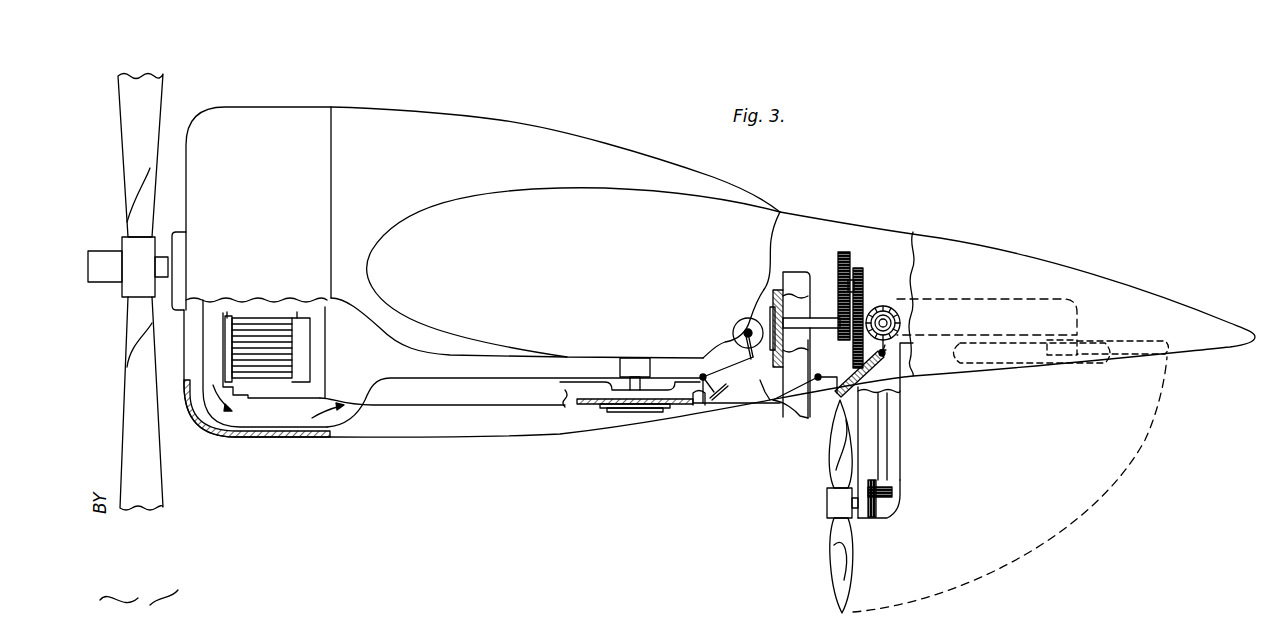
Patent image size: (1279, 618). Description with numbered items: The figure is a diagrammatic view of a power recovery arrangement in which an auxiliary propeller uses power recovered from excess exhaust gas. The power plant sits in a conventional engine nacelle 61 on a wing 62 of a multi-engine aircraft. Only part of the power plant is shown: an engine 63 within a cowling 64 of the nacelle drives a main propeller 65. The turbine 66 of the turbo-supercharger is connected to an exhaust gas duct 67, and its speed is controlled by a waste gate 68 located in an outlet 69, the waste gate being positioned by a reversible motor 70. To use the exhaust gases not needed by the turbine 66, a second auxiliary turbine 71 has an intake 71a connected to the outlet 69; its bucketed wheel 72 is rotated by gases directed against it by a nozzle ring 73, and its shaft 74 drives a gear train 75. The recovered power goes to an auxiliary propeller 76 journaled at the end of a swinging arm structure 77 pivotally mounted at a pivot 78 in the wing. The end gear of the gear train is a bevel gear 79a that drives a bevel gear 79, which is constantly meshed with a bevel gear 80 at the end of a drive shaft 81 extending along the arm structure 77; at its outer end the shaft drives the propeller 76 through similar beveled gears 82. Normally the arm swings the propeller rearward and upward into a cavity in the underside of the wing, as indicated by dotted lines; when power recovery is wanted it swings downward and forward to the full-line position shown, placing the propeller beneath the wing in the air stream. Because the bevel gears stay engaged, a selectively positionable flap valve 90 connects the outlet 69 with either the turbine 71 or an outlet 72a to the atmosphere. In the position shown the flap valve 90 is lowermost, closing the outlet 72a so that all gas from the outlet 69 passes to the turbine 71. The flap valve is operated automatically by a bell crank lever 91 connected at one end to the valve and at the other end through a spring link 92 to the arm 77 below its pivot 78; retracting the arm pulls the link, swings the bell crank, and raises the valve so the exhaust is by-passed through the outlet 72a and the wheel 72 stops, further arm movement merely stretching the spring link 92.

The engine nacelle 61 is at (490, 137).
The wing 62 is at (590, 205).
The engine 63 is at (266, 308).
The cowling 64 is at (299, 122).
The propeller 65 is at (152, 89).
The turbine 66 is at (584, 407).
The exhaust gas duct 67 is at (497, 395).
The waste gate 68 is at (716, 398).
The outlet 69 is at (702, 405).
The reversible motor 70 is at (755, 325).
The auxiliary turbine 71 is at (768, 355).
The intake 71a is at (764, 398).
The bucketed wheel 72 is at (771, 294).
The outlet to the atmosphere 72a is at (803, 408).
The nozzle ring 73 is at (777, 290).
The shaft 74 is at (818, 321).
The gear train 75 is at (865, 263).
The auxiliary propeller 76 is at (840, 568).
The swinging arm structure 77 is at (893, 430).
The pivot 78 is at (893, 315).
The bevel gear 79 is at (903, 320).
The bevel gear 79a is at (885, 306).
The bevel gear 80 is at (895, 322).
The drive shaft 81 is at (883, 408).
The beveled gears 82 is at (890, 502).
The flap valve 90 is at (806, 392).
The bell crank lever 91 is at (823, 375).
The spring link 92 is at (864, 370).